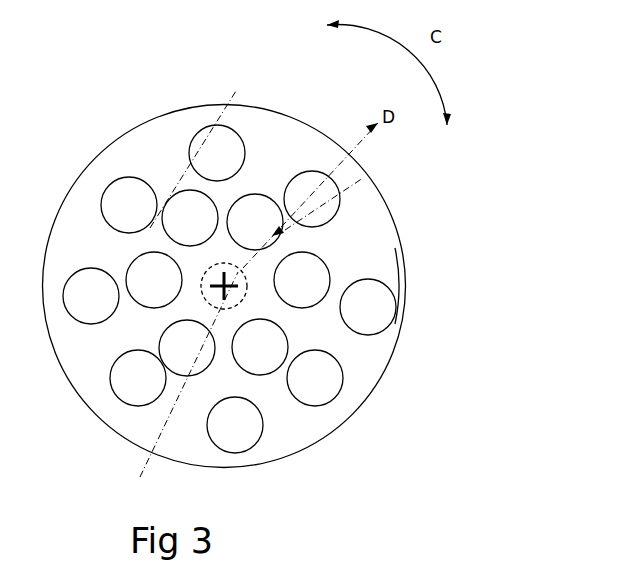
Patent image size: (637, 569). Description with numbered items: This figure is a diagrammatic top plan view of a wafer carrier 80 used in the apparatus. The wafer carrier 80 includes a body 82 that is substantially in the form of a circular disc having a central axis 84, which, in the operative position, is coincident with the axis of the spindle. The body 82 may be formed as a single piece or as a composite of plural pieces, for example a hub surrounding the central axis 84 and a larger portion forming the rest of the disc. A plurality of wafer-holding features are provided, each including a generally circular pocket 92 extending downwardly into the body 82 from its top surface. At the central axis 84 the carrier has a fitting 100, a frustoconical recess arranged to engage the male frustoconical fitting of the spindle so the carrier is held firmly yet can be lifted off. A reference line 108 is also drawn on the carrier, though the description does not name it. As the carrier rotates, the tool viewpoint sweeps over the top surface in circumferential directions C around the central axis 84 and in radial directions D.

The wafer carrier 80 is at (403, 235).
The body 82 is at (405, 297).
The central axis 84 is at (363, 178).
The pocket 92 is at (330, 390).
The fitting 100 is at (148, 462).
The reference line 108 is at (236, 91).